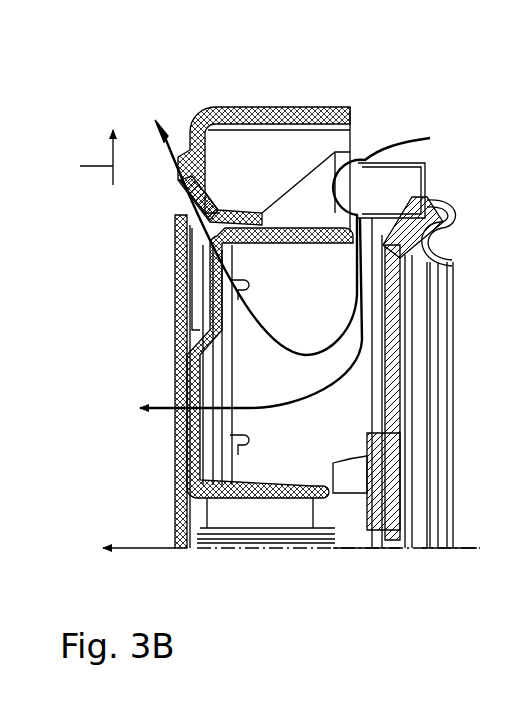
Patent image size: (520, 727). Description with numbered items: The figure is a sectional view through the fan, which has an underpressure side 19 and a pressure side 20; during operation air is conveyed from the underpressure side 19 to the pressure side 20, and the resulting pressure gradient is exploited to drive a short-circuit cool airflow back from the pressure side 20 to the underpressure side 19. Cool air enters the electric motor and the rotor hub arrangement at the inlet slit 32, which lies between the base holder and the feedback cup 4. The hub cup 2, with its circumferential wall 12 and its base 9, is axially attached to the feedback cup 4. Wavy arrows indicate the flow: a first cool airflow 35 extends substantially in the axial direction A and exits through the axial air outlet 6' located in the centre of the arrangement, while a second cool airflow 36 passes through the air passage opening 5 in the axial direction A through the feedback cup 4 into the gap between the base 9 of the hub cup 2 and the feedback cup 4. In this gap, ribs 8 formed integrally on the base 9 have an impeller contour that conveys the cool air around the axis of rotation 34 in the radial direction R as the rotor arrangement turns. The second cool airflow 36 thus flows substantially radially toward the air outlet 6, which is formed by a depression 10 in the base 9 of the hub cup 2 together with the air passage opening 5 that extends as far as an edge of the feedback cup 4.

The hub cup 2 is at (215, 108).
The circumferential wall 12 is at (268, 108).
The underpressure side 19 is at (178, 110).
The pressure side 20 is at (388, 104).
The inlet slit 32 is at (437, 152).
The feedback cup 4 is at (305, 230).
The air outlet 6 is at (152, 201).
The axial air outlet 6' is at (129, 382).
The depression 10 is at (182, 216).
The base 9 is at (183, 254).
The air passage opening 5 is at (198, 260).
The ribs 8 is at (198, 318).
The second cool airflow 36 is at (275, 340).
The first cool airflow 35 is at (277, 412).
The axis of rotation 34 is at (225, 552).
The radial direction R is at (88, 157).
The axial direction A is at (147, 544).